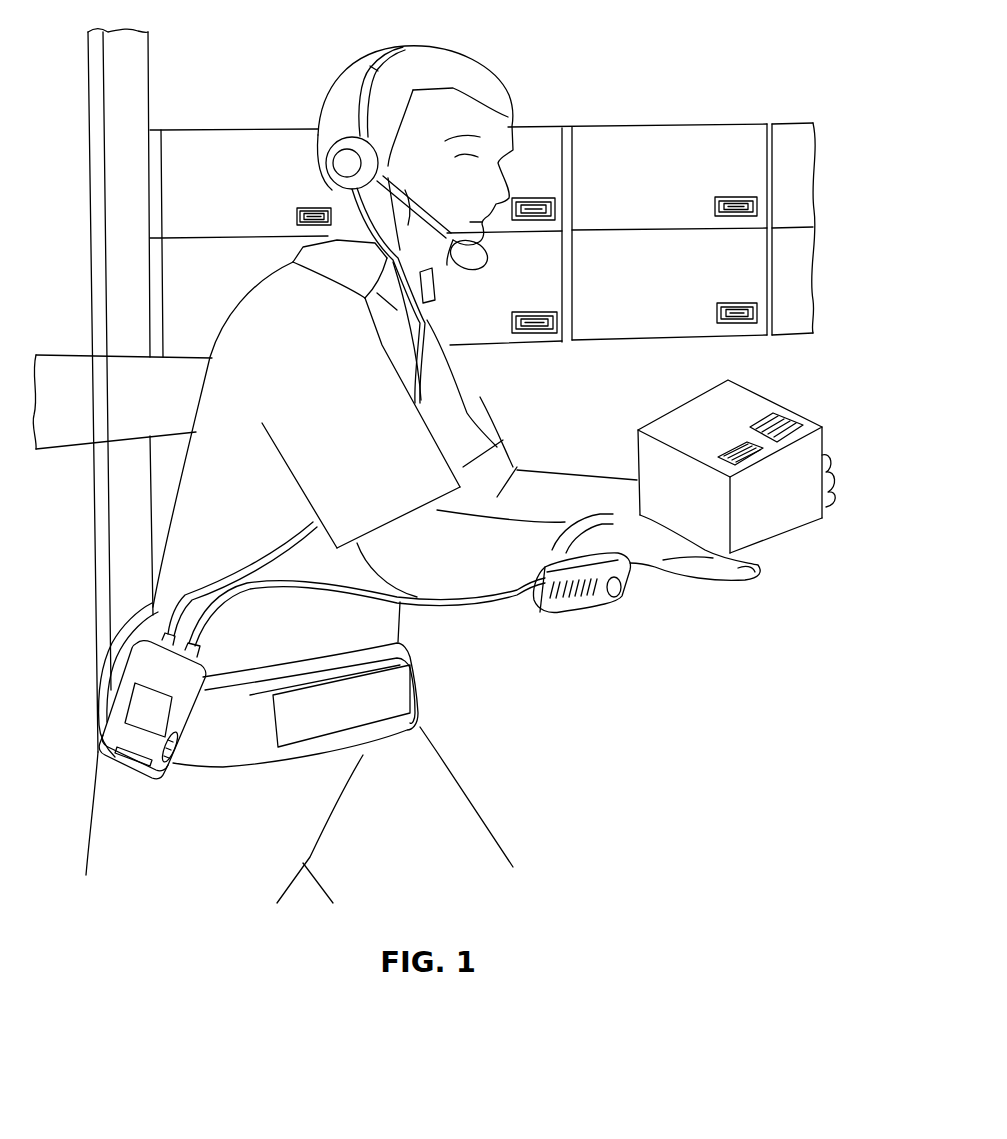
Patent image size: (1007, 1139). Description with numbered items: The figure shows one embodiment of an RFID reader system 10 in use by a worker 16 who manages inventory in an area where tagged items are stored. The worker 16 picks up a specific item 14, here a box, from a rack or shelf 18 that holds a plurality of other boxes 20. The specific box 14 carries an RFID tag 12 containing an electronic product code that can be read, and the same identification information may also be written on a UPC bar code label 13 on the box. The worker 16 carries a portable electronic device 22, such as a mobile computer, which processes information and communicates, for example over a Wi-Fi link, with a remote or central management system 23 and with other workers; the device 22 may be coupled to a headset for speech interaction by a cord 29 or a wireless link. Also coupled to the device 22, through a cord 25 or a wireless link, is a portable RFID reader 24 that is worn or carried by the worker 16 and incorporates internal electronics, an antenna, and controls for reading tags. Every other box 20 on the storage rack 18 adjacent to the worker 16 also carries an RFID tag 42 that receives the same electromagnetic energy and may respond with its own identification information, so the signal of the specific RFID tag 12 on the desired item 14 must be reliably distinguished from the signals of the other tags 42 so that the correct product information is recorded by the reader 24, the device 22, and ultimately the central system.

The RFID reader system 10 is at (709, 73).
The RFID tag 12 is at (735, 447).
The UPC bar code label 13 is at (800, 421).
The item 14 is at (793, 537).
The worker 16 is at (363, 620).
The shelf 18 is at (88, 289).
The boxes 20 is at (227, 134).
The portable electronic device 22 is at (188, 722).
The central management system 23 is at (326, 163).
The portable RFID reader 24 is at (582, 608).
The cord 25 is at (233, 601).
The cord 29 is at (248, 557).
The RFID tag 42 is at (297, 216).